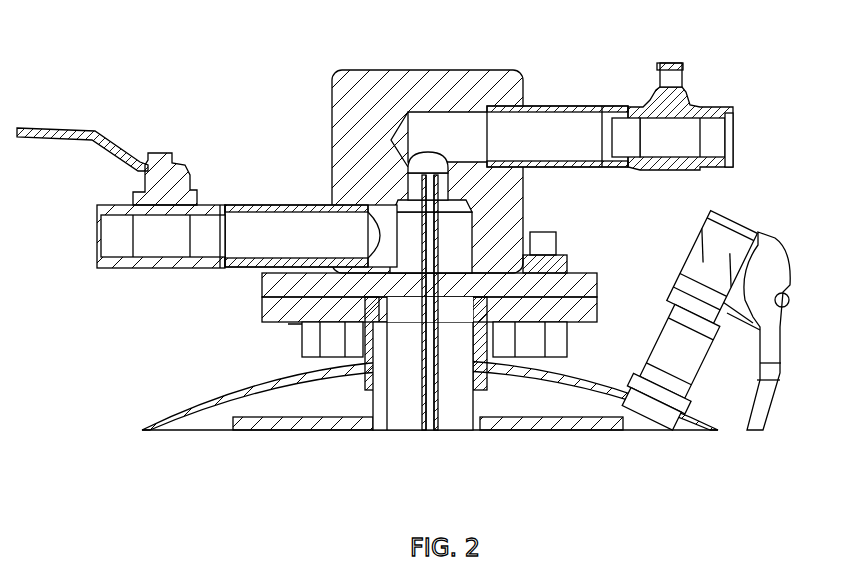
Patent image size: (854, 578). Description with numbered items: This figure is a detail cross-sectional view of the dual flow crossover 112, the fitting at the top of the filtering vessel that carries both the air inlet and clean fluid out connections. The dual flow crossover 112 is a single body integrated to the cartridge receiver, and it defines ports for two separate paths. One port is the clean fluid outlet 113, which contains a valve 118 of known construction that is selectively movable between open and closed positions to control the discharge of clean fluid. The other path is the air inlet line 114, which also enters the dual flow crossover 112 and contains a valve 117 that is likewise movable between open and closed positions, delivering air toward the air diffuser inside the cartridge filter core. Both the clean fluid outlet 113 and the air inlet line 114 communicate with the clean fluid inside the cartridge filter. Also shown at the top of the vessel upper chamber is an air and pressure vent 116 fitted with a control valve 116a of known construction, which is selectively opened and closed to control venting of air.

The dual flow crossover 112 is at (426, 83).
The clean fluid outlet 113 is at (112, 242).
The air inlet line 114 is at (724, 137).
The air and pressure vent 116 is at (645, 367).
The control valve 116a is at (732, 252).
The valve 117 is at (662, 105).
The valve 118 is at (162, 258).